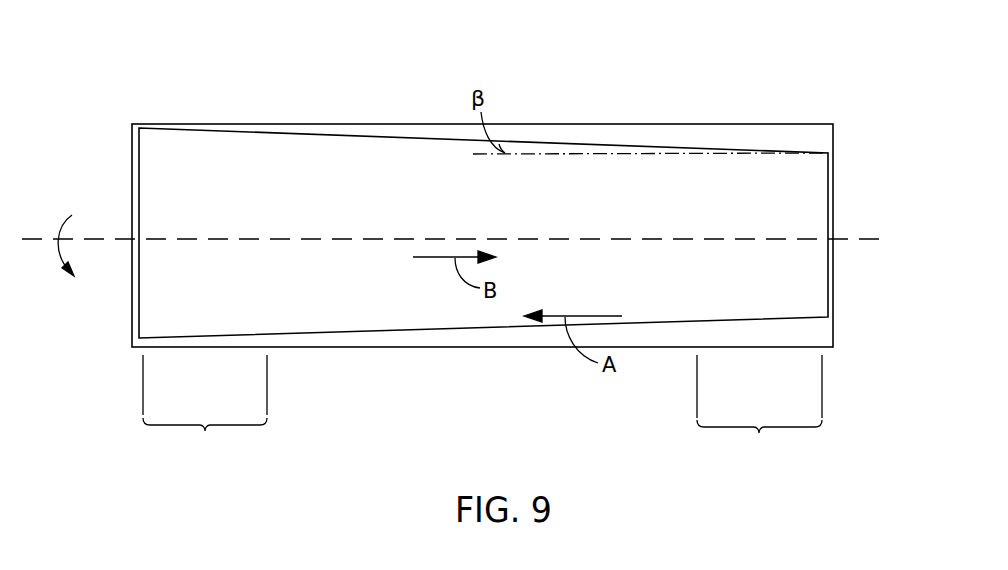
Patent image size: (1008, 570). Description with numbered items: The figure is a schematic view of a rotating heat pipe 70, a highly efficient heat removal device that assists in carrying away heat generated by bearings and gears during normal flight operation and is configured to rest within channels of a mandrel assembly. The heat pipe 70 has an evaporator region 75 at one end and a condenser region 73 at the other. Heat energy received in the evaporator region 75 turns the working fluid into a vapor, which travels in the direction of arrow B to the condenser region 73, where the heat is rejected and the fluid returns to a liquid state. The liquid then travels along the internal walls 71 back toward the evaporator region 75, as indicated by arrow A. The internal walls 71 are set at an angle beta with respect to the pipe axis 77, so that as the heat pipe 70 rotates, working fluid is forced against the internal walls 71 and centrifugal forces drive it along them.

The rotating heat pipe 70 is at (657, 96).
The internal walls 71 is at (378, 137).
The condenser region 73 is at (759, 415).
The evaporator region 75 is at (205, 410).
The pipe axis 77 is at (847, 239).